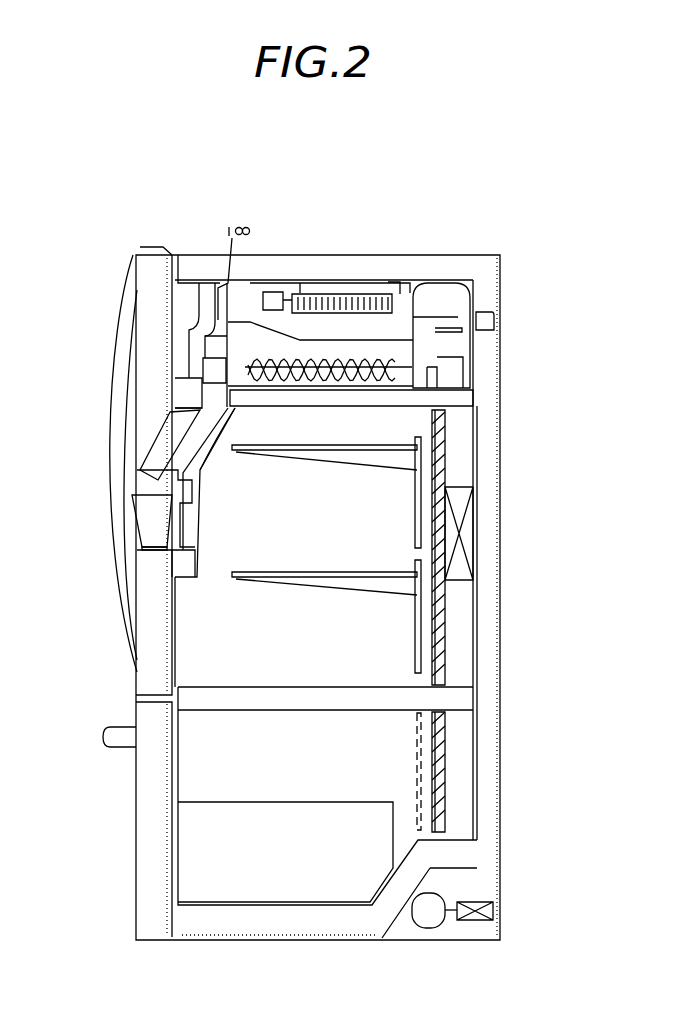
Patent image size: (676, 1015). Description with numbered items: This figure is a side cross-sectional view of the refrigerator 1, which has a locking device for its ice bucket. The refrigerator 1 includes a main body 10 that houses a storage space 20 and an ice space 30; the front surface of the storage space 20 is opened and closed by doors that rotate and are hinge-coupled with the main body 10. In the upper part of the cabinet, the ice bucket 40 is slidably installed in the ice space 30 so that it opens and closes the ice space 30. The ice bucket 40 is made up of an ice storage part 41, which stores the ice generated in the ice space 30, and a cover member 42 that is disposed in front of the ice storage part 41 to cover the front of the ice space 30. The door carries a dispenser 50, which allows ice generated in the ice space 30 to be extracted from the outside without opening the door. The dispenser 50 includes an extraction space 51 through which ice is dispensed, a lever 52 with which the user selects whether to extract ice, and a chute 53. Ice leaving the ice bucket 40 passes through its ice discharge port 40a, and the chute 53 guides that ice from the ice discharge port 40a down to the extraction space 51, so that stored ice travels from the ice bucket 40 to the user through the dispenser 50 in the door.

The refrigerator 1 is at (514, 263).
The main body 10 is at (502, 364).
The storage space 20 is at (293, 528).
The ice space 30 is at (260, 355).
The ice bucket 40 is at (334, 289).
The ice discharge port 40a is at (186, 405).
The ice storage part 41 is at (293, 293).
The cover member 42 is at (268, 207).
The dispenser 50 is at (152, 481).
The extraction space 51 is at (165, 488).
The lever 52 is at (170, 530).
The chute 53 is at (190, 440).